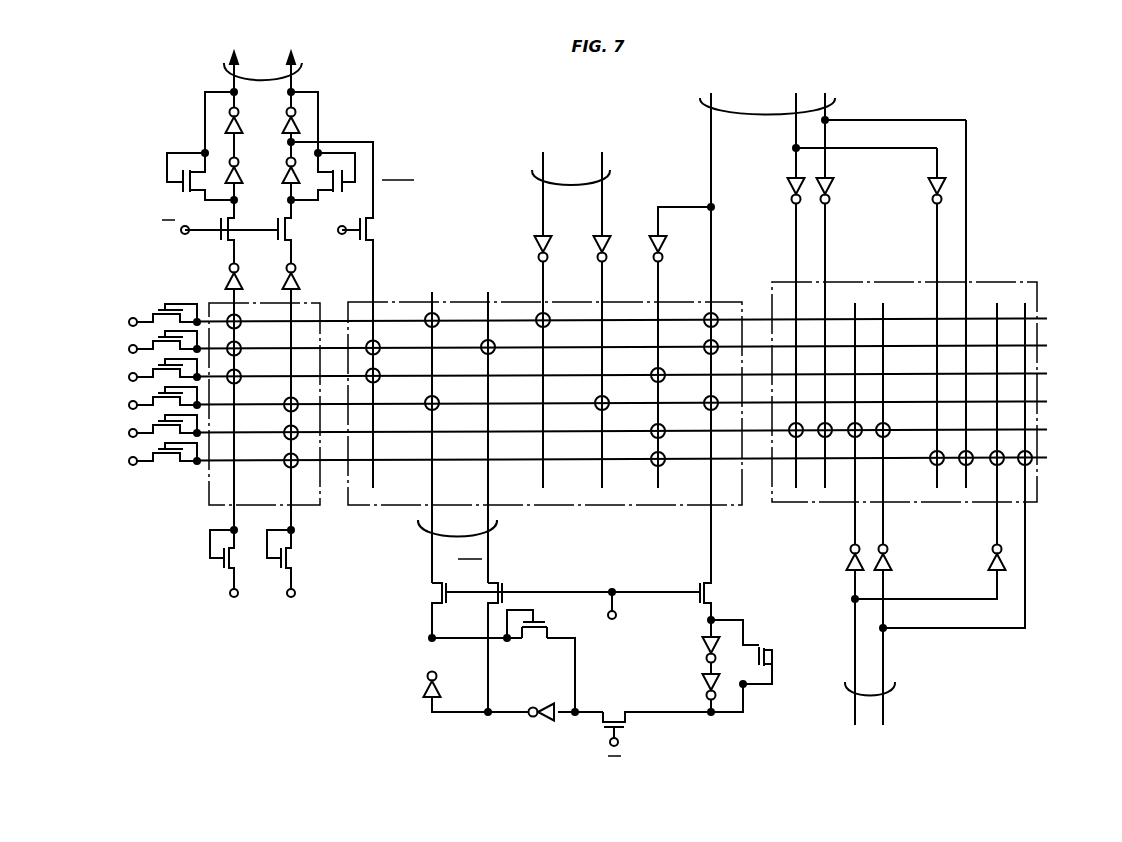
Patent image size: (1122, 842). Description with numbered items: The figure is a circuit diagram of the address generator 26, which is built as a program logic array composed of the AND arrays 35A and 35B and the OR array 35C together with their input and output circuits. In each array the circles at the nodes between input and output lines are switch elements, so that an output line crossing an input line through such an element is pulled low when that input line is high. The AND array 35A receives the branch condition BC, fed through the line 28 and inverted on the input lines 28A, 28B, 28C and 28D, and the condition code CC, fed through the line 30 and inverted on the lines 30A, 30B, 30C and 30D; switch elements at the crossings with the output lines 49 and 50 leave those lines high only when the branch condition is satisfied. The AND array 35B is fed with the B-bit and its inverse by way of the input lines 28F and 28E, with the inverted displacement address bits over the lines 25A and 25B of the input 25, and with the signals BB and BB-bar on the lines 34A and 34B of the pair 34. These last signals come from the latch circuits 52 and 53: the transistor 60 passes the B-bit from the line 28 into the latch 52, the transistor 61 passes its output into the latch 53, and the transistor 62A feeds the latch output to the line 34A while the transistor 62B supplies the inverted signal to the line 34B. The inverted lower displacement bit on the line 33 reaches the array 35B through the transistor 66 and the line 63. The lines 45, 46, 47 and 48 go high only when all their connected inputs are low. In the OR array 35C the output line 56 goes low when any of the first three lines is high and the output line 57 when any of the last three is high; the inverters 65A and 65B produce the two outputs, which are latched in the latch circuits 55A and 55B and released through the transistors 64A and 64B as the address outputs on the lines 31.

The input lines 25 is at (565, 309).
The input line 25A is at (604, 272).
The input line 25B is at (546, 272).
The address generator 26 is at (266, 653).
The line 28 is at (833, 345).
The input line 28A is at (796, 230).
The input line 28B is at (826, 232).
The input line 28C is at (937, 230).
The input line 28D is at (967, 232).
The input line 28E is at (714, 272).
The input line 28F is at (660, 272).
The line 30 is at (939, 526).
The input line 30A is at (853, 532).
The input line 30B is at (885, 535).
The input line 30C is at (996, 532).
The input line 30D is at (1027, 535).
The output lines 31 is at (222, 72).
The line 33 is at (374, 156).
The lines 34 is at (465, 437).
The line 34A is at (430, 550).
The line 34B is at (490, 550).
The AND array 35A is at (1037, 497).
The AND array 35B is at (392, 506).
The OR array 35C is at (209, 492).
The line 45 is at (1047, 319).
The line 46 is at (1047, 346).
The line 47 is at (1047, 374).
The line 48 is at (1047, 402).
The output line 49 is at (1047, 430).
The output line 50 is at (1047, 458).
The latch circuit 52 is at (735, 702).
The latch circuit 53 is at (450, 713).
The latch circuit 55A is at (225, 125).
The latch circuit 55B is at (300, 125).
The output line 56 is at (230, 524).
The output line 57 is at (293, 529).
The transistor 60 is at (716, 597).
The transistor 61 is at (613, 711).
The transistor 62A is at (432, 593).
The transistor 62B is at (492, 584).
The line 63 is at (376, 268).
The transistor 64A is at (226, 243).
The transistor 64B is at (294, 243).
The inverter 65A is at (226, 284).
The inverter 65B is at (299, 284).
The transistor 66 is at (368, 230).